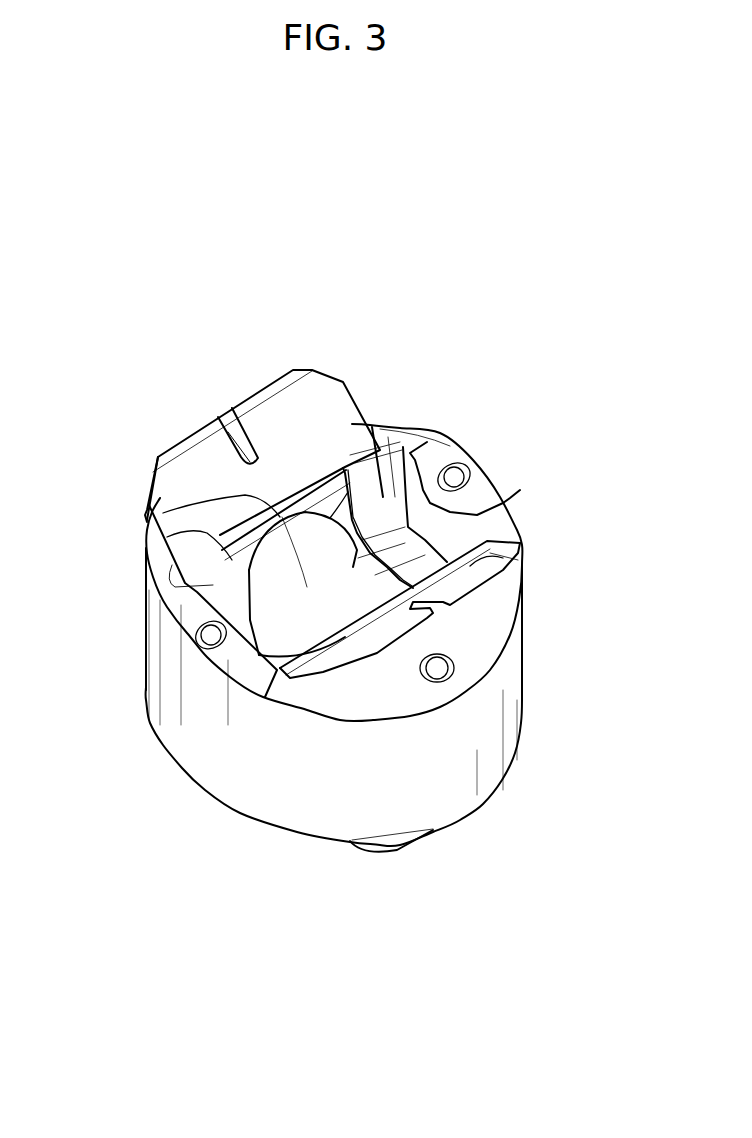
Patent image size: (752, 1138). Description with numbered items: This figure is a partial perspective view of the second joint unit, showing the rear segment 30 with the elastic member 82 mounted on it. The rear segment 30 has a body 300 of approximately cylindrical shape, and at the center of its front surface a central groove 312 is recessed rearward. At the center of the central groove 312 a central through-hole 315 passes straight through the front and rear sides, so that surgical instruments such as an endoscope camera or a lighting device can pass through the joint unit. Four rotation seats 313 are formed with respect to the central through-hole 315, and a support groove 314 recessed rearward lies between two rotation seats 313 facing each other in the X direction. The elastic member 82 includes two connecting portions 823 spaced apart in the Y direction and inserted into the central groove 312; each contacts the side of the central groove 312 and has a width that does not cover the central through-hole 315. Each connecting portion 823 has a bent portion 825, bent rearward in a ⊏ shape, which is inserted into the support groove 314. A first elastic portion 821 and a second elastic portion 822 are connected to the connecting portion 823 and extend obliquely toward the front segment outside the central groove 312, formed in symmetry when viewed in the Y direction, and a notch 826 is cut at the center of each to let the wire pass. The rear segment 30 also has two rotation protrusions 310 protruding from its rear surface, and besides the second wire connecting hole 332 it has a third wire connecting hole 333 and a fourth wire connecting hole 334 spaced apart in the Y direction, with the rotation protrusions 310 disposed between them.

The rear segment 30 is at (488, 738).
The body 300 is at (255, 780).
The rotation protrusion 310 is at (400, 850).
The central groove 312 is at (440, 425).
The rotation seat 313 is at (347, 493).
The support groove 314 is at (457, 473).
The central through-hole 315 is at (240, 497).
The second wire connecting hole 332 is at (440, 672).
The third wire connecting hole 333 is at (210, 637).
The fourth wire connecting hole 334 is at (493, 467).
The elastic member 82 is at (150, 482).
The first elastic portion 821 is at (198, 478).
The second elastic portion 822 is at (512, 547).
The connecting portion 823 is at (372, 487).
The bent portion 825 is at (470, 566).
The notch 826 is at (243, 440).